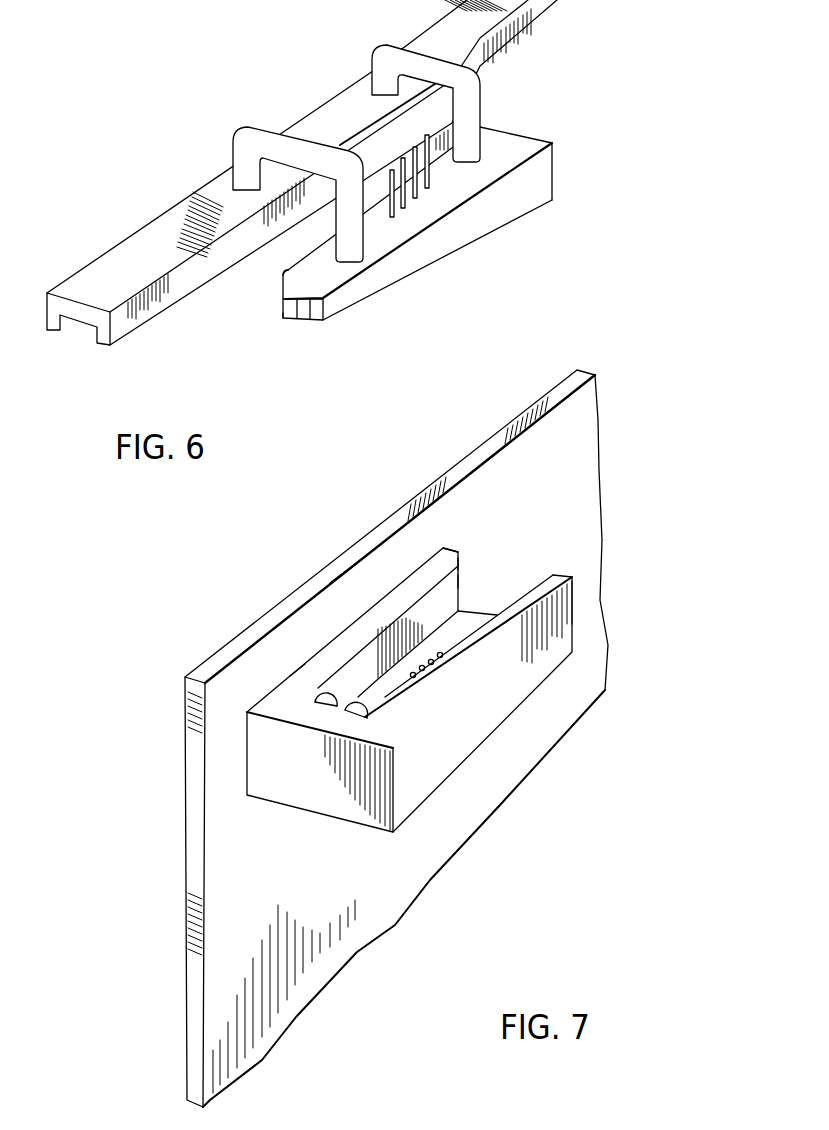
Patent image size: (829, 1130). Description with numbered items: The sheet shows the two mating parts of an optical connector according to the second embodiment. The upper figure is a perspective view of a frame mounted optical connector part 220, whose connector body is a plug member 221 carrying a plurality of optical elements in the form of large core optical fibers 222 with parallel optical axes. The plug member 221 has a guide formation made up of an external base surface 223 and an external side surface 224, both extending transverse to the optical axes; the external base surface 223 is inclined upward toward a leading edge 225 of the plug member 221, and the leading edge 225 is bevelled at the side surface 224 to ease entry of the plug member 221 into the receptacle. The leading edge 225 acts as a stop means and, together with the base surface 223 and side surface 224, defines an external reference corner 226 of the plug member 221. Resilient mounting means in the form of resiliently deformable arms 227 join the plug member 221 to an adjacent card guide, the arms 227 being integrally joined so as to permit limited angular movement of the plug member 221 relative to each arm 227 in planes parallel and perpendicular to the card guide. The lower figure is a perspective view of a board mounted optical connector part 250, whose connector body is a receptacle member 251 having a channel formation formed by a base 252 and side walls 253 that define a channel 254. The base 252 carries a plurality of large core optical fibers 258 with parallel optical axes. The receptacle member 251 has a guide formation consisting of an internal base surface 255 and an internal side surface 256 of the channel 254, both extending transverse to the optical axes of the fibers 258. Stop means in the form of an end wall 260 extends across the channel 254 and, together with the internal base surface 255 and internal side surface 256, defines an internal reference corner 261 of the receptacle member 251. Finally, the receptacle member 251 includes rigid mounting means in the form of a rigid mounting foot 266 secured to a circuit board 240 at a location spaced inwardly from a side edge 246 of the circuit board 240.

In FIG. 6, the frame mounted optical connector part 220 is at (419, 251).
In FIG. 6, the plug member 221 is at (410, 262).
In FIG. 6, the large core optical fibers 222 is at (430, 188).
In FIG. 6, the external base surface 223 is at (287, 323).
In FIG. 6, the external side surface 224 is at (286, 273).
In FIG. 6, the leading edge 225 is at (292, 318).
In FIG. 6, the external reference corner 226 is at (285, 316).
In FIG. 6, the resiliently deformable arms 227 is at (253, 137).
In FIG. 7, the circuit board 240 is at (396, 738).
In FIG. 7, the side edge 246 is at (308, 590).
In FIG. 7, the board mounted optical connector part 250 is at (390, 678).
In FIG. 7, the receptacle member 251 is at (430, 777).
In FIG. 7, the base 252 is at (457, 580).
In FIG. 7, the side walls 253 is at (458, 565).
In FIG. 7, the channel 254 is at (407, 620).
In FIG. 7, the internal base surface 255 is at (497, 612).
In FIG. 7, the internal side surface 256 is at (460, 552).
In FIG. 7, the large core optical fibers 258 is at (441, 656).
In FIG. 7, the end wall 260 is at (345, 711).
In FIG. 7, the internal reference corner 261 is at (315, 703).
In FIG. 7, the rigid mounting foot 266 is at (300, 677).